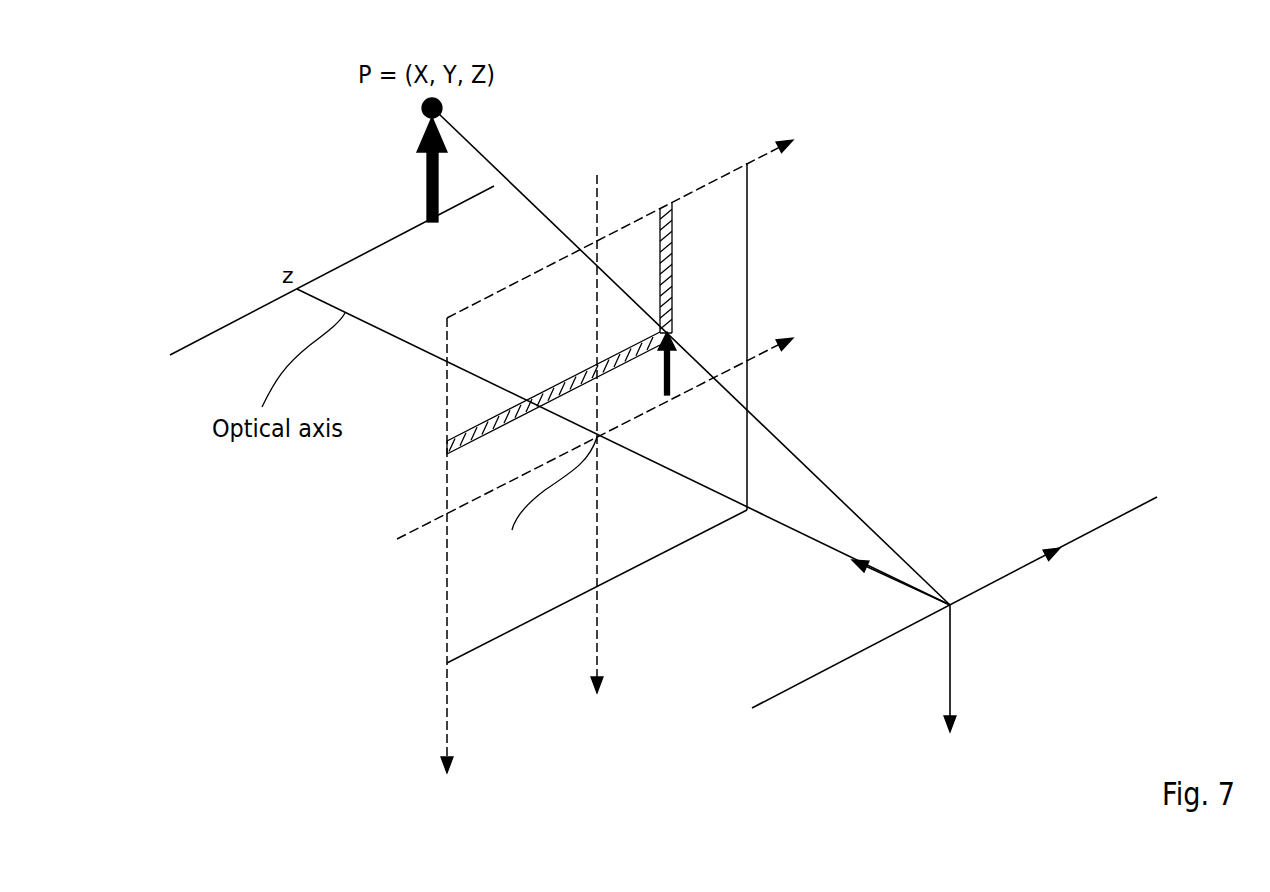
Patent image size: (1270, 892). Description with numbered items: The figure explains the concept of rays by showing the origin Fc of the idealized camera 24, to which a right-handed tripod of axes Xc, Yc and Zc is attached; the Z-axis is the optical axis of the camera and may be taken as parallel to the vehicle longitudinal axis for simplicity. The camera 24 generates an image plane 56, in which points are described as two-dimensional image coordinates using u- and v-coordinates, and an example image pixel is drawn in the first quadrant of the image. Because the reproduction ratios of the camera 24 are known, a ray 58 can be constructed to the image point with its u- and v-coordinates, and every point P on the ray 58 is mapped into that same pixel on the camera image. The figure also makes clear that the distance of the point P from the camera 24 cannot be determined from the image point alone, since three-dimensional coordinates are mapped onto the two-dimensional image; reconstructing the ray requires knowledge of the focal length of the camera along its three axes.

The ray 58 is at (518, 189).
The image plane 56 is at (717, 247).
The camera 24 is at (958, 580).